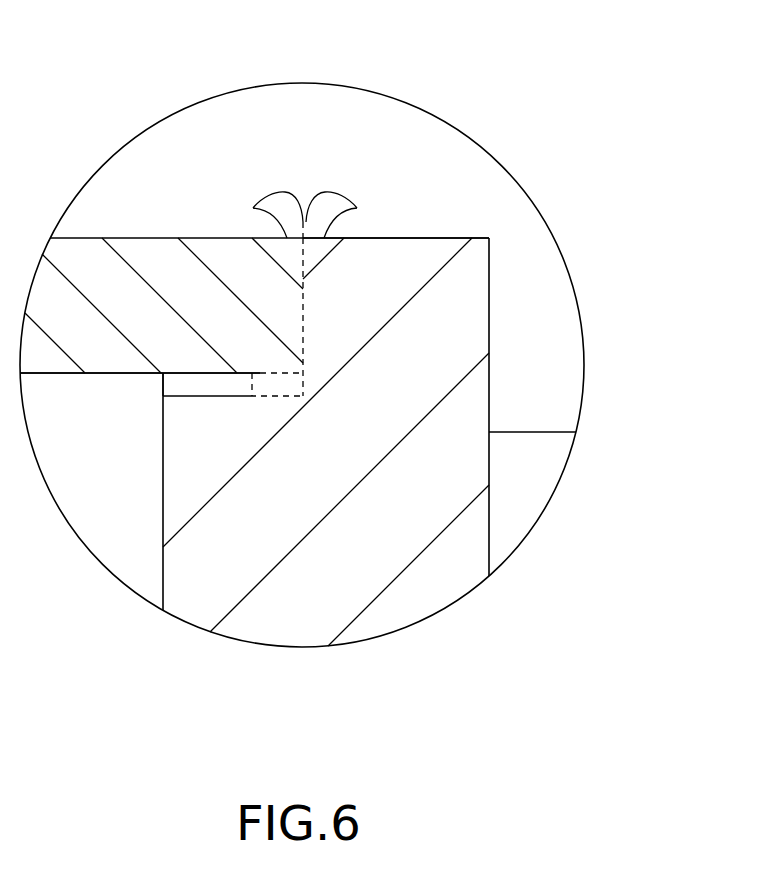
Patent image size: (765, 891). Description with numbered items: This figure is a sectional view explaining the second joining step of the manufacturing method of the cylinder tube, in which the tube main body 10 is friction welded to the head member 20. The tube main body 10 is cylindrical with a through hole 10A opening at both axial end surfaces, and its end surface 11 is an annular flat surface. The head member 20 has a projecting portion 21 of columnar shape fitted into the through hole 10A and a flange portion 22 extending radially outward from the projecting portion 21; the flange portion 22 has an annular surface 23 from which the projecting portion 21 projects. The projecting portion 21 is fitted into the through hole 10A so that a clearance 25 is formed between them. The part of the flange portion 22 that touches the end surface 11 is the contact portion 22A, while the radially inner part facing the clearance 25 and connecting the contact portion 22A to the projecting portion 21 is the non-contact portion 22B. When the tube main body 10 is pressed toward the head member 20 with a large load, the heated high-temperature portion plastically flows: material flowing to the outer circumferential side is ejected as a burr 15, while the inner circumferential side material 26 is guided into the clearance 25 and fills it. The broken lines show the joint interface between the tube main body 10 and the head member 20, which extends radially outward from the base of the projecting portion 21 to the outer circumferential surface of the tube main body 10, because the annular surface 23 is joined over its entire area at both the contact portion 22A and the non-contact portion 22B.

The tube main body 10 is at (155, 312).
The through hole 10A is at (96, 375).
The end surface 11 is at (313, 290).
The burr 15 is at (303, 222).
The head member 20 is at (515, 252).
The projecting portion 21 is at (190, 437).
The flange portion 22 is at (402, 238).
The contact portion 22A is at (310, 312).
The non-contact portion 22B is at (310, 382).
The annular surface 23 is at (290, 262).
The clearance 25 is at (147, 405).
The inner circumferential side material 26 is at (220, 380).